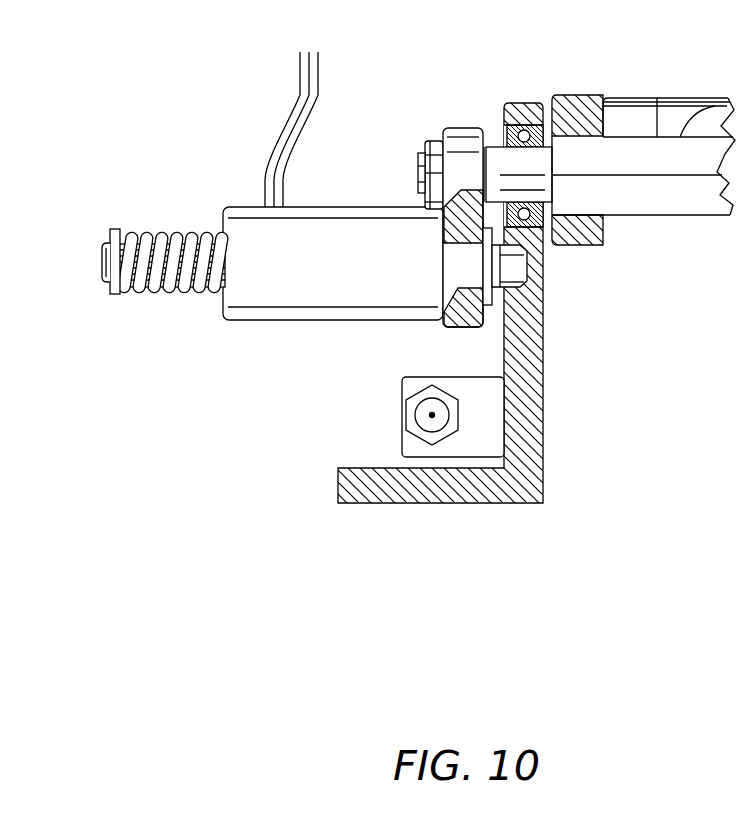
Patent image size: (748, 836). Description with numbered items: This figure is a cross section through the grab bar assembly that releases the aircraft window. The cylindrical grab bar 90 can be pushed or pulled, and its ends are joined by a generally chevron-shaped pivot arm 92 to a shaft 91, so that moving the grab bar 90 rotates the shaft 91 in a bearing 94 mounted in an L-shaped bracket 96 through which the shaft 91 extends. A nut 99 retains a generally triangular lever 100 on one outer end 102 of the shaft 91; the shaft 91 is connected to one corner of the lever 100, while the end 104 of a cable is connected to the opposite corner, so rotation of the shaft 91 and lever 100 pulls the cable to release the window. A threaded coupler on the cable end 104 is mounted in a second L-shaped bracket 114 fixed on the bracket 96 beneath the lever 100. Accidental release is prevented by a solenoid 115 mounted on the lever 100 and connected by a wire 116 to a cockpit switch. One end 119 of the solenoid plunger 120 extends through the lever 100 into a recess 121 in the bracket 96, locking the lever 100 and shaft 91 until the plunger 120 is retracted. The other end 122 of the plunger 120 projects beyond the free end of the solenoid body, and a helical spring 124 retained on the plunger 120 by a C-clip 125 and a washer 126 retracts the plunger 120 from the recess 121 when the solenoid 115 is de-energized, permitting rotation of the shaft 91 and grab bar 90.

The grab bar 90 is at (663, 120).
The shaft 91 is at (653, 197).
The pivot arm 92 is at (573, 95).
The bearing 94 is at (528, 127).
The L-shaped bracket 96 is at (545, 484).
The nut 99 is at (428, 142).
The lever 100 is at (468, 135).
The outer end of the shaft 102 is at (497, 148).
The end of cable 104 is at (430, 415).
The L-shaped bracket 114 is at (403, 455).
The solenoid 115 is at (258, 320).
The wire 116 is at (300, 93).
The end of the solenoid plunger 119 is at (527, 282).
The solenoid plunger 120 is at (467, 278).
The recess 121 is at (521, 292).
The other end of the plunger 122 is at (102, 261).
The helical spring 124 is at (143, 291).
The C-clip 125 is at (113, 228).
The washer 126 is at (117, 296).